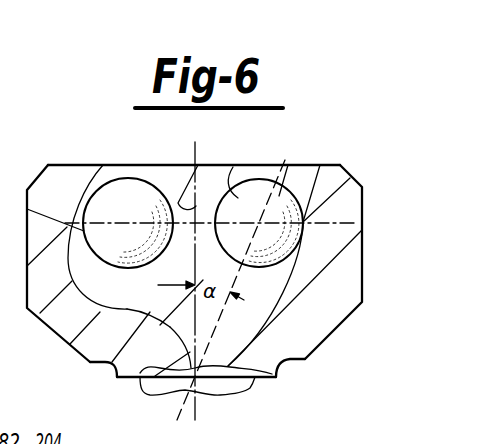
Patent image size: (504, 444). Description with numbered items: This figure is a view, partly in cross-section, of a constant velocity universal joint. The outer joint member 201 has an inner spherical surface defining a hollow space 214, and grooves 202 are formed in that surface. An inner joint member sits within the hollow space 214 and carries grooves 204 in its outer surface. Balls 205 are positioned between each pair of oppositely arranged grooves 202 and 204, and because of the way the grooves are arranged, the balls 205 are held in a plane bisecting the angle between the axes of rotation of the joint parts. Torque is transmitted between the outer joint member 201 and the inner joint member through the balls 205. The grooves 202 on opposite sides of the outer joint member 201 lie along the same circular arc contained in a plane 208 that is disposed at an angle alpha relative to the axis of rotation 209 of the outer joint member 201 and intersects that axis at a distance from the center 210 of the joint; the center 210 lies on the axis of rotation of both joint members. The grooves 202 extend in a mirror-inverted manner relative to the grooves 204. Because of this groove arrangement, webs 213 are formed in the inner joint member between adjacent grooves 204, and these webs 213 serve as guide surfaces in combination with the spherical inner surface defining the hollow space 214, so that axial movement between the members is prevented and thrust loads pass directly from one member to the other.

The outer joint member 201 is at (60, 336).
The grooves 202 is at (278, 372).
The grooves 204 is at (10, 307).
The balls 205 is at (242, 147).
The plane 208 is at (289, 165).
The axis of rotation 209 is at (198, 411).
The center 210 is at (183, 190).
The webs 213 is at (93, 436).
The hollow space 214 is at (122, 377).